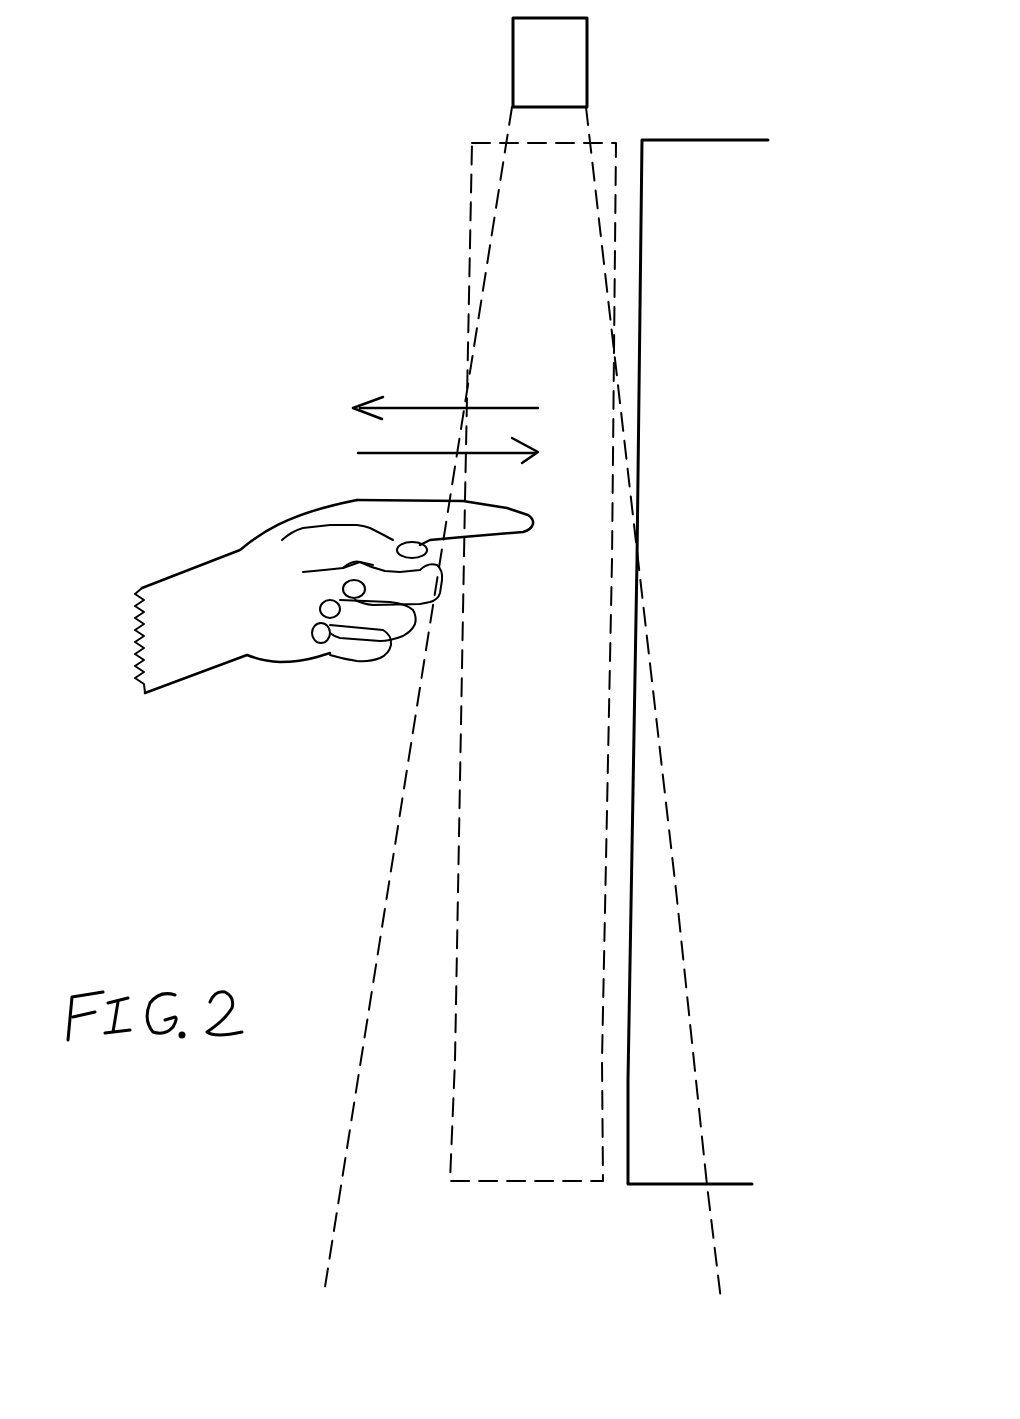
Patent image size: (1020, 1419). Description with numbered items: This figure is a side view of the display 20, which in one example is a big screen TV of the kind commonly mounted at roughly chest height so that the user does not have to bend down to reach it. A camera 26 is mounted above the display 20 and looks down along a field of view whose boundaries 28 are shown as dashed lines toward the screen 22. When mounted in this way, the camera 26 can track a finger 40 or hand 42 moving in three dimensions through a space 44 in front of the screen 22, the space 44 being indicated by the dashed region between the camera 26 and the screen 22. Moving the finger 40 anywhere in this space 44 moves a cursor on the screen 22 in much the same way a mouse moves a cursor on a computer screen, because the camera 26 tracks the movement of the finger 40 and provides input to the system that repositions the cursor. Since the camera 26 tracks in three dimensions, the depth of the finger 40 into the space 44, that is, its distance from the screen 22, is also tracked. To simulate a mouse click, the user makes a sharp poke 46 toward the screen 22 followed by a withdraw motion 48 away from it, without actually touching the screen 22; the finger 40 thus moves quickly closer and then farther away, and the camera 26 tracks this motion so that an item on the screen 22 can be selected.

The display 20 is at (747, 90).
The screen 22 is at (627, 1112).
The camera 26 is at (625, 37).
The field of view boundary 28 is at (333, 889).
The finger 40 is at (518, 585).
The hand 42 is at (273, 708).
The space 44 is at (452, 1100).
The poke 46 is at (495, 455).
The withdraw motion 48 is at (428, 408).